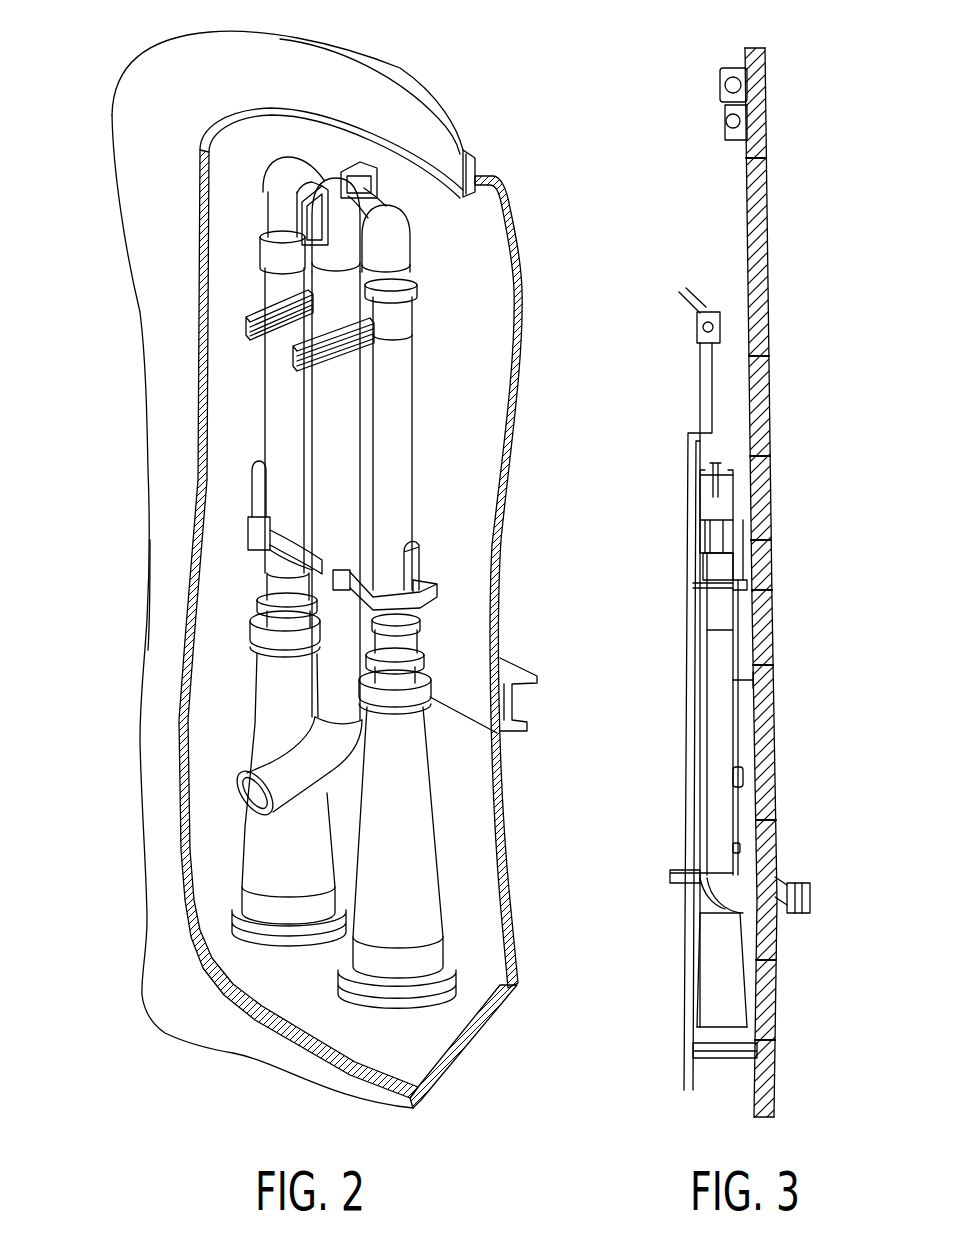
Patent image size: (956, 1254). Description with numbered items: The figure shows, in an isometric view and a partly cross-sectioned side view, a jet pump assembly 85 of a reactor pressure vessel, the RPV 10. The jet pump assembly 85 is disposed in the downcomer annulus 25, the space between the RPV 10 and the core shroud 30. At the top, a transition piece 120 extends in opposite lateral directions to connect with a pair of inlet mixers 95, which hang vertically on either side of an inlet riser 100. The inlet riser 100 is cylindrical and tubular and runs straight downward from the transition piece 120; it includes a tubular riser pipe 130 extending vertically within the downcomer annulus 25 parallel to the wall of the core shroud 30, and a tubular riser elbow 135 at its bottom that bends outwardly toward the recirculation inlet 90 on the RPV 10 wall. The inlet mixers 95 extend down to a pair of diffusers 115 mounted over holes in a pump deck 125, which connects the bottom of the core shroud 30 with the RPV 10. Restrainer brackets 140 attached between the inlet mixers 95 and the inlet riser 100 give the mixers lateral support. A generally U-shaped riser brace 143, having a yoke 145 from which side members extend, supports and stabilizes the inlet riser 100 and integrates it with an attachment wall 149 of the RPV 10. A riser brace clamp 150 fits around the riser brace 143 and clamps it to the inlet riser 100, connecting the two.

In FIG. 2, the RPV 10 is at (146, 176).
In FIG. 3, the RPV 10 is at (772, 282).
In FIG. 2, the downcomer annulus 25 is at (427, 207).
In FIG. 3, the downcomer annulus 25 is at (743, 745).
In FIG. 2, the core shroud 30 is at (527, 249).
In FIG. 3, the core shroud 30 is at (683, 548).
In FIG. 2, the jet pump assembly 85 is at (260, 445).
In FIG. 3, the jet pump assembly 85 is at (743, 537).
In FIG. 2, the recirculation inlet 90 is at (247, 760).
In FIG. 3, the recirculation inlet 90 is at (800, 883).
In FIG. 2, the inlet mixers 95 is at (262, 289).
In FIG. 3, the inlet mixers 95 is at (693, 610).
In FIG. 2, the inlet riser 100 is at (365, 455).
In FIG. 3, the inlet riser 100 is at (700, 717).
In FIG. 2, the diffusers 115 is at (250, 840).
In FIG. 3, the diffusers 115 is at (747, 967).
In FIG. 2, the transition piece 120 is at (313, 167).
In FIG. 3, the transition piece 120 is at (720, 507).
In FIG. 2, the pump deck 125 is at (497, 1005).
In FIG. 3, the pump deck 125 is at (730, 1057).
In FIG. 2, the riser pipe 130 is at (365, 415).
In FIG. 3, the riser pipe 130 is at (755, 682).
In FIG. 2, the riser elbow 135 is at (352, 757).
In FIG. 3, the riser elbow 135 is at (710, 903).
In FIG. 2, the restrainer brackets 140 is at (250, 530).
In FIG. 3, the restrainer brackets 140 is at (743, 778).
In FIG. 2, the riser brace 143 is at (248, 320).
In FIG. 3, the yoke 145 is at (740, 573).
In FIG. 2, the attachment wall 149 is at (158, 553).
In FIG. 3, the riser brace clamp 150 is at (765, 640).